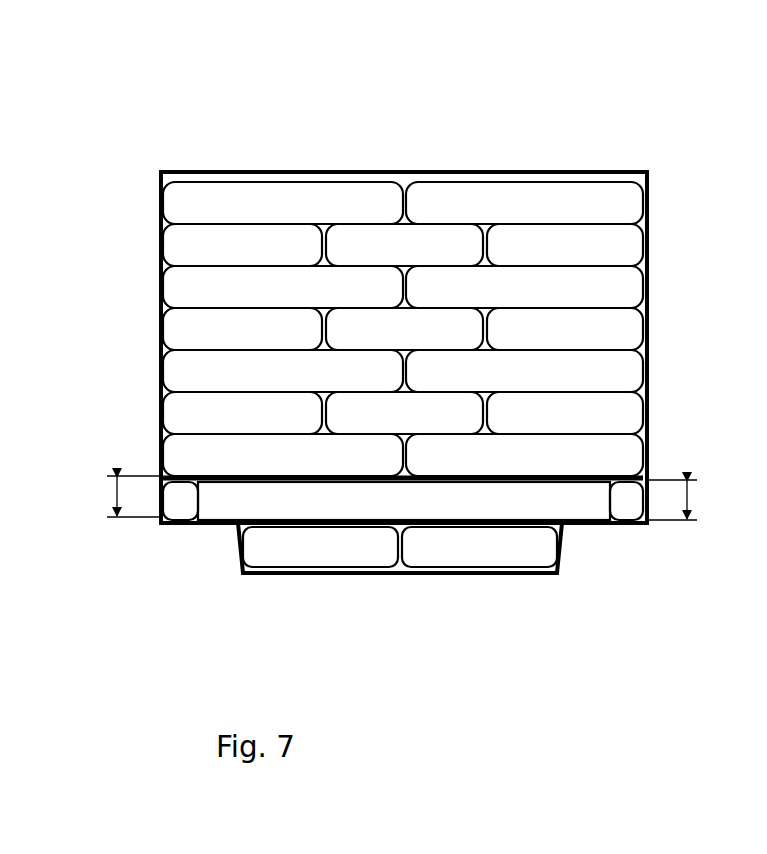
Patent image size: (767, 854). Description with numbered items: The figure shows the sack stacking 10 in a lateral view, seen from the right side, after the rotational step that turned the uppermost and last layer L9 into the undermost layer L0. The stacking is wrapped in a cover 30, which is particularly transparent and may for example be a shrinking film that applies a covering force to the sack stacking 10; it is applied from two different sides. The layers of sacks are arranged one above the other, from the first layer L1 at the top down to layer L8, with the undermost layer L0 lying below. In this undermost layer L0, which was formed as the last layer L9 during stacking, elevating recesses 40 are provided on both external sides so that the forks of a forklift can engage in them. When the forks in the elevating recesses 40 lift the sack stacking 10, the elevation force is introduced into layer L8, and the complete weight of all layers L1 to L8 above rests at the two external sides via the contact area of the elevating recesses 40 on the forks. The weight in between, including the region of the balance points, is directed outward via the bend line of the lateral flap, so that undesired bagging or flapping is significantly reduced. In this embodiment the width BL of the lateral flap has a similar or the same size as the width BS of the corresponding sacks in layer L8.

The sack stacking 10 is at (368, 106).
The cover 30 is at (470, 169).
The elevating recesses 40 is at (212, 562).
The undermost layer L0 is at (447, 567).
The first layer L1 is at (635, 205).
The layer L8 is at (619, 476).
The last layer L9 is at (413, 570).
The width of the sacks BS is at (119, 496).
The width of the lateral flap BL is at (687, 500).